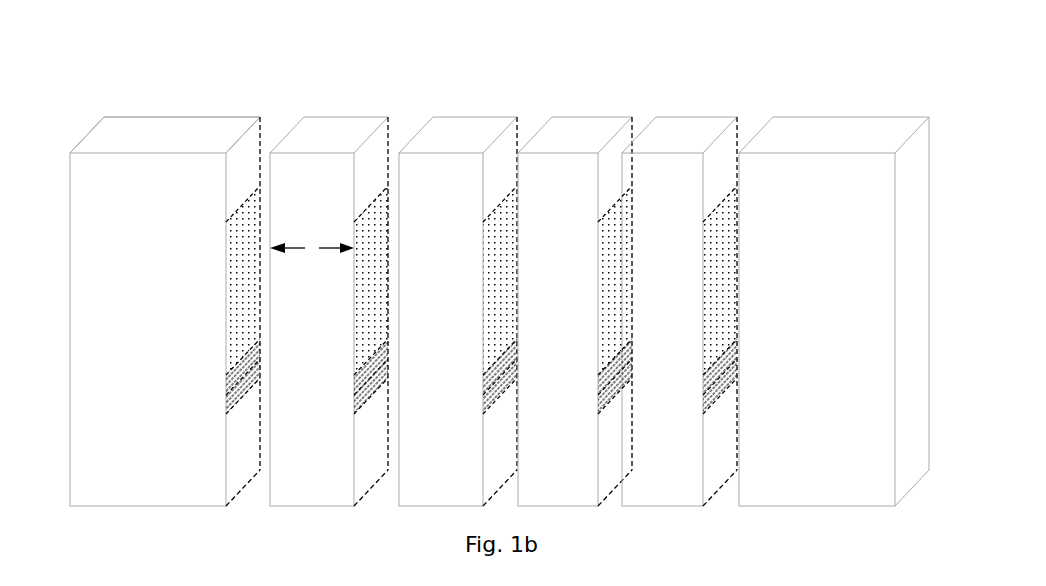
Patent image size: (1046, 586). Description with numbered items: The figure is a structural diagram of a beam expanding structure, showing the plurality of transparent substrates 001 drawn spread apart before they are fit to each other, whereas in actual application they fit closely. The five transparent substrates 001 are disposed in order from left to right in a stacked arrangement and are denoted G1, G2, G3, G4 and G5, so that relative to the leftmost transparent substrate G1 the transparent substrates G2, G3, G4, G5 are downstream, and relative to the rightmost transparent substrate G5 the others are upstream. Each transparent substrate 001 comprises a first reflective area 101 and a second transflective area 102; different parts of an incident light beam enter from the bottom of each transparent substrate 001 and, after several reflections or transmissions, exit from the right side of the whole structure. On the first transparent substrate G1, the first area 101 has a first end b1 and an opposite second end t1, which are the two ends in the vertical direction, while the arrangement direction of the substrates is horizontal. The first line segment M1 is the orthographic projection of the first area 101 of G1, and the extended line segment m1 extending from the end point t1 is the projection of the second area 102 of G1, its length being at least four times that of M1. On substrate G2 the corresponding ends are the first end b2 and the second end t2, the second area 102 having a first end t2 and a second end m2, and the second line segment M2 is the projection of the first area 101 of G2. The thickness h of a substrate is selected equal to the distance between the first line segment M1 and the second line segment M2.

The transparent substrate 001 is at (175, 128).
The first reflective area 101 is at (243, 376).
The second transflective area 102 is at (243, 280).
The first transparent substrate G1 is at (165, 311).
The transparent substrate G2 is at (329, 311).
The transparent substrate G3 is at (458, 311).
The transparent substrate G4 is at (575, 311).
The transparent substrate G5 is at (679, 311).
The extended line segment m1 is at (229, 246).
The second end of the first area t1 is at (233, 360).
The first line segment M1 is at (231, 381).
The first end of the first area b1 is at (232, 403).
The second end of the second area m2 is at (357, 247).
The second end t2 is at (362, 362).
The second line segment M2 is at (358, 386).
The first end b2 is at (360, 405).
The thickness h is at (312, 248).